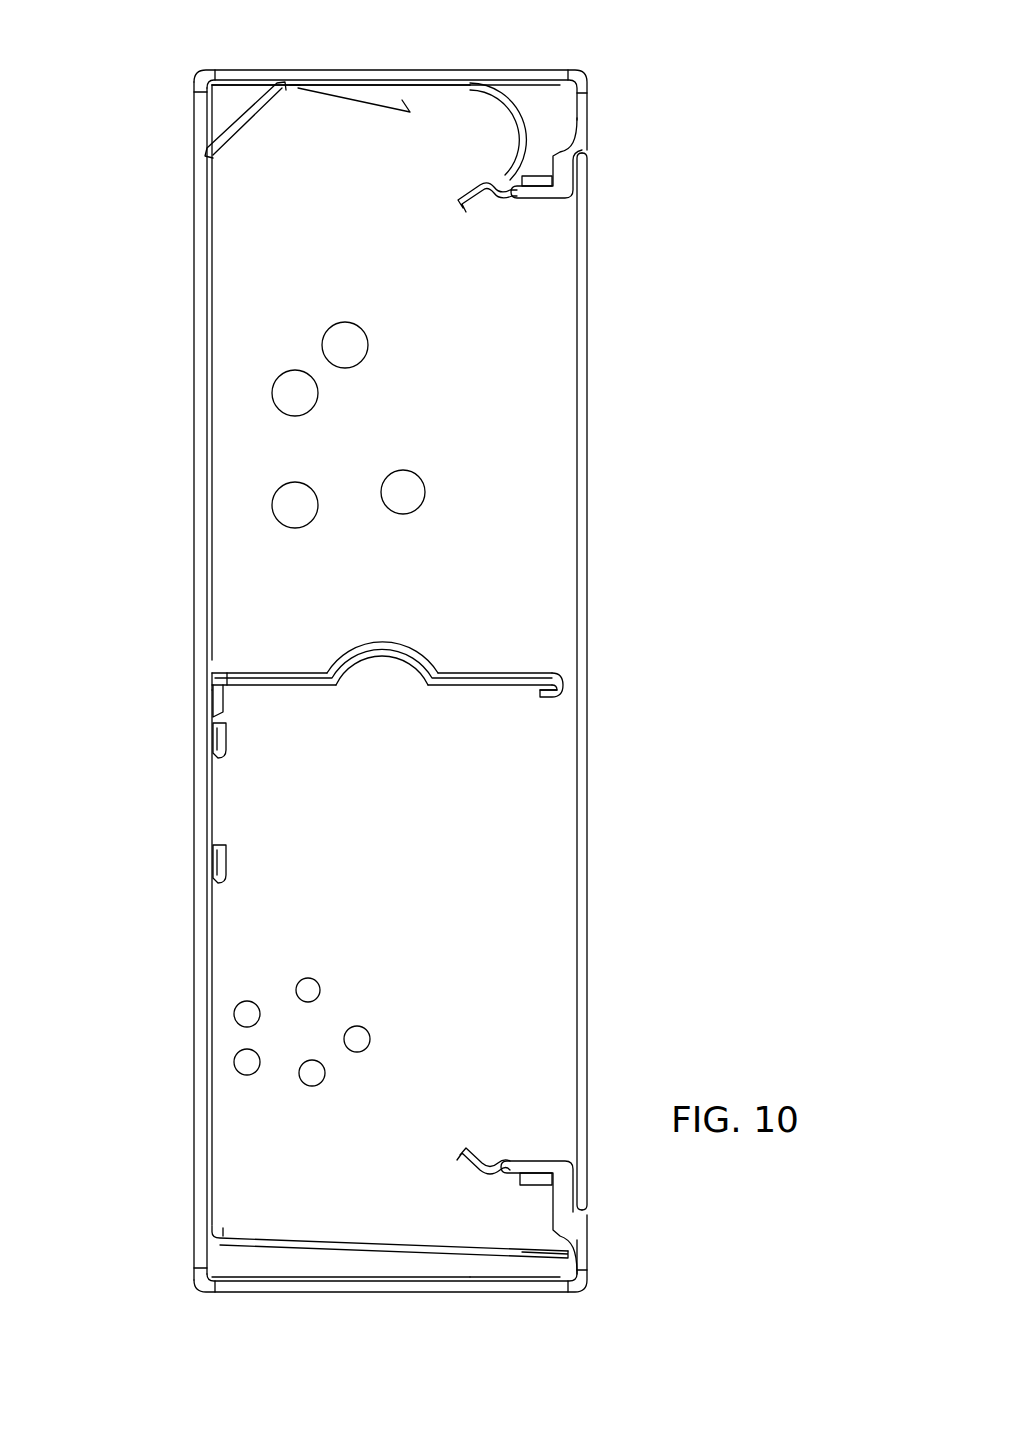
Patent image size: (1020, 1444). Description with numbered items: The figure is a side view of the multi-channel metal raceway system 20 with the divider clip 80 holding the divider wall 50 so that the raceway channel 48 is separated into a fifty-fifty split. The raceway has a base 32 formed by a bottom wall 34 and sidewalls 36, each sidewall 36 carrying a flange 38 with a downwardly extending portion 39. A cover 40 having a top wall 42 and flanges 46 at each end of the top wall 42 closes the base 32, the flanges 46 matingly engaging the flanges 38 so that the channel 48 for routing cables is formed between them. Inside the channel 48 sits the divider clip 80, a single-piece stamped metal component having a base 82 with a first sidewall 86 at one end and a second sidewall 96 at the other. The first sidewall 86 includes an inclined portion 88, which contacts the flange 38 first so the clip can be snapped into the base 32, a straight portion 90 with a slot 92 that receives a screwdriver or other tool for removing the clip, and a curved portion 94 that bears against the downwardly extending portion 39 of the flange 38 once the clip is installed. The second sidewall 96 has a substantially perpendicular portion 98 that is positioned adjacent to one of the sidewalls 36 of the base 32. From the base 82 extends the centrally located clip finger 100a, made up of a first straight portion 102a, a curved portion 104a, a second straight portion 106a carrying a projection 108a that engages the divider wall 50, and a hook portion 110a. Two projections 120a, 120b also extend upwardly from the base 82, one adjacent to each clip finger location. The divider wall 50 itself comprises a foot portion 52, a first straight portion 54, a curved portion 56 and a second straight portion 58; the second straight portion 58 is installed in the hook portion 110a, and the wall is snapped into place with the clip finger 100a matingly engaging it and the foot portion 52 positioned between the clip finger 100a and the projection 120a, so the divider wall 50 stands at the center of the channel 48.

The multi-channel metal raceway system 20 is at (622, 330).
The base 32 is at (500, 68).
The bottom wall 34 is at (195, 385).
The sidewalls 36 is at (270, 68).
The flange 38 is at (575, 75).
The downwardly extending portion 39 is at (495, 205).
The cover 40 is at (588, 412).
The top wall 42 is at (583, 493).
The flanges 46 is at (540, 205).
The channel 48 is at (350, 940).
The divider wall 50 is at (340, 690).
The foot portion 52 is at (220, 705).
The first straight portion 54 is at (300, 698).
The curved portion 56 is at (385, 690).
The second straight portion 58 is at (498, 695).
The divider clip 80 is at (213, 305).
The base 82 is at (215, 205).
The first sidewall 86 is at (300, 92).
The inclined portion 88 is at (237, 117).
The straight portion 90 is at (345, 83).
The slot 92 is at (405, 103).
The curved portion 94 is at (530, 125).
The second sidewall 96 is at (258, 1232).
The substantially perpendicular portion 98 is at (338, 1245).
The clip finger 100a is at (297, 668).
The first straight portion 102a is at (255, 665).
The curved portion 104a is at (400, 648).
The second straight portion 106a is at (540, 670).
The projection 108a is at (480, 668).
The hook portion 110a is at (560, 690).
The projection 120a is at (213, 736).
The projection 120b is at (222, 860).